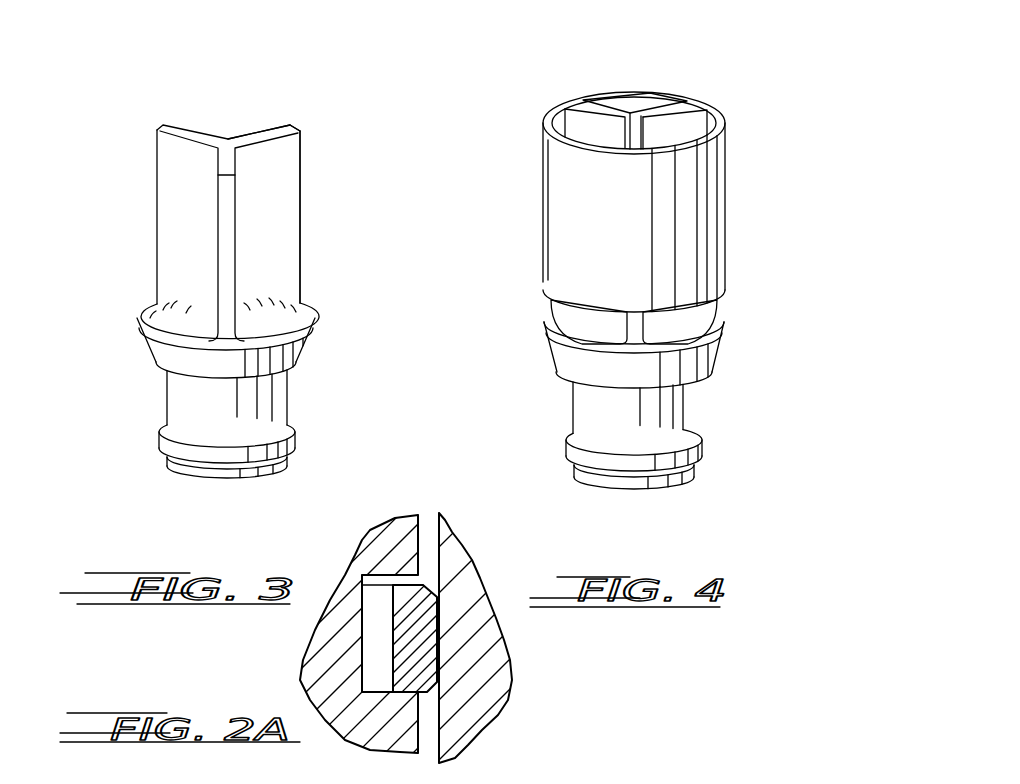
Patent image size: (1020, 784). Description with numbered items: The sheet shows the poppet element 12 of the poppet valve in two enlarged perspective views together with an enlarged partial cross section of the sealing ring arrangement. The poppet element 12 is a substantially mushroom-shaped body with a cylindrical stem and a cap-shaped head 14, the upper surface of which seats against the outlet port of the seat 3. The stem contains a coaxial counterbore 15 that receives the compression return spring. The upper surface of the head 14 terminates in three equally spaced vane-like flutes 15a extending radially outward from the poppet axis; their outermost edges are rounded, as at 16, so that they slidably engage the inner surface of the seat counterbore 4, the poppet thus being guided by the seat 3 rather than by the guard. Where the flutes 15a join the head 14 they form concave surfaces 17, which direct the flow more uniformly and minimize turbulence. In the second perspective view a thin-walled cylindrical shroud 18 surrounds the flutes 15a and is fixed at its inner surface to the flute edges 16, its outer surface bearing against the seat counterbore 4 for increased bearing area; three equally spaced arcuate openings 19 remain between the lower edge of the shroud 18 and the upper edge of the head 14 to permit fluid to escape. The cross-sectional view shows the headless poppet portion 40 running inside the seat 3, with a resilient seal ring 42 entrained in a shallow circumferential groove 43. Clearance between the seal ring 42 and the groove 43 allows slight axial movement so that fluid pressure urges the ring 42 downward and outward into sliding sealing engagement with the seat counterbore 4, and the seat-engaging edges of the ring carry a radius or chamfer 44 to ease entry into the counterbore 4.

In FIG. 2A, the seat 3 is at (462, 560).
In FIG. 2A, the counterbore 4 is at (428, 528).
In FIG. 3, the poppet element 12 is at (272, 400).
In FIG. 4, the poppet element 12 is at (687, 422).
In FIG. 3, the head 14 is at (305, 342).
In FIG. 3, the counterbore 15 is at (173, 123).
In FIG. 3, the flutes 15a is at (272, 130).
In FIG. 4, the flutes 15a is at (605, 103).
In FIG. 3, the rounded edges 16 is at (300, 130).
In FIG. 3, the concave surfaces 17 is at (177, 312).
In FIG. 4, the concave surfaces 17 is at (690, 312).
In FIG. 4, the shroud 18 is at (555, 218).
In FIG. 4, the arcuate openings 19 is at (550, 313).
In FIG. 2A, the headless poppet portion 40 is at (390, 538).
In FIG. 2A, the seal ring 42 is at (423, 640).
In FIG. 2A, the groove 43 is at (372, 648).
In FIG. 2A, the radius or chamfer 44 is at (430, 587).